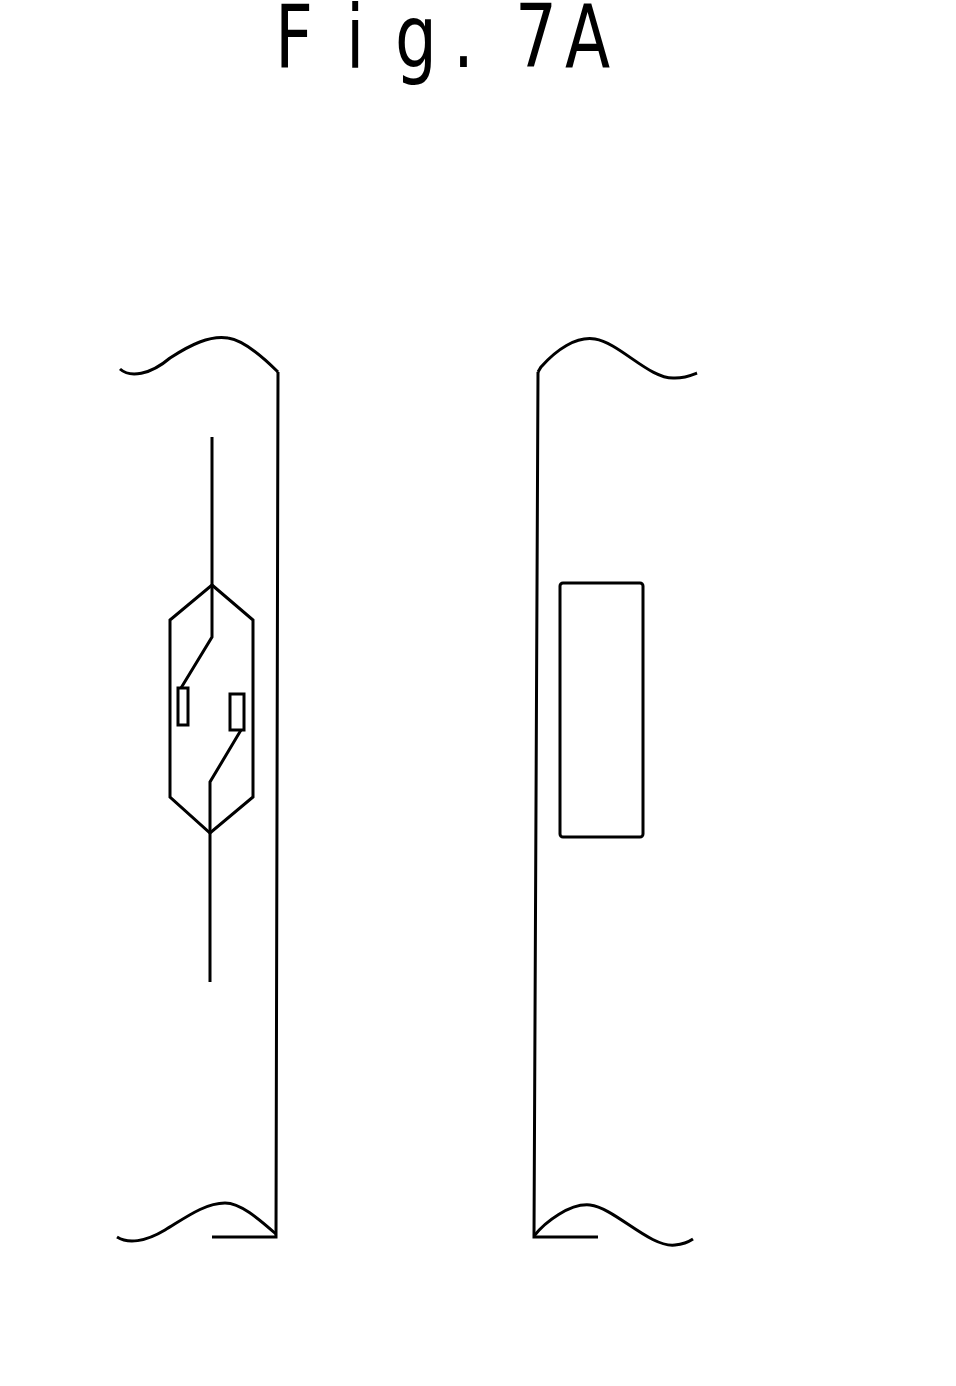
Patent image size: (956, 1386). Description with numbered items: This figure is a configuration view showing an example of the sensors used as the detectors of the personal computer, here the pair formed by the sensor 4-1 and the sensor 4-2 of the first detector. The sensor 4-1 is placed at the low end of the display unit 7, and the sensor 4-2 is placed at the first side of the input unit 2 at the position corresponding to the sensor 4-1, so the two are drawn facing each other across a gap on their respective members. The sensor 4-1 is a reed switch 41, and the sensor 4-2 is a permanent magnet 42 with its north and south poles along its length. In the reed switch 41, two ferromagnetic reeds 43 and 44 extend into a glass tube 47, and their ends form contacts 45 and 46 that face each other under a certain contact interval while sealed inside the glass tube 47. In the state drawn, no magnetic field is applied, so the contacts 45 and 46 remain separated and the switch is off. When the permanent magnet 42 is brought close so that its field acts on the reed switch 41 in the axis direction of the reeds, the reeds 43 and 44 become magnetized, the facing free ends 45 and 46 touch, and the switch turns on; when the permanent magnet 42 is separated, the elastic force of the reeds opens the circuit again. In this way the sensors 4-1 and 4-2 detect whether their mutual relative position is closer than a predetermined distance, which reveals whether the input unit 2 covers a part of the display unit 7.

The sensor 4-1 is at (267, 833).
The sensor 4-2 is at (520, 838).
The display unit 7 is at (197, 833).
The input unit 2 is at (615, 838).
The reed switch 41 is at (229, 709).
The permanent magnet 42 is at (601, 665).
The ferromagnetic reed 43 is at (168, 562).
The ferromagnetic reed 44 is at (183, 856).
The contact 45 is at (140, 690).
The contact 46 is at (303, 684).
The glass tube 47 is at (167, 709).